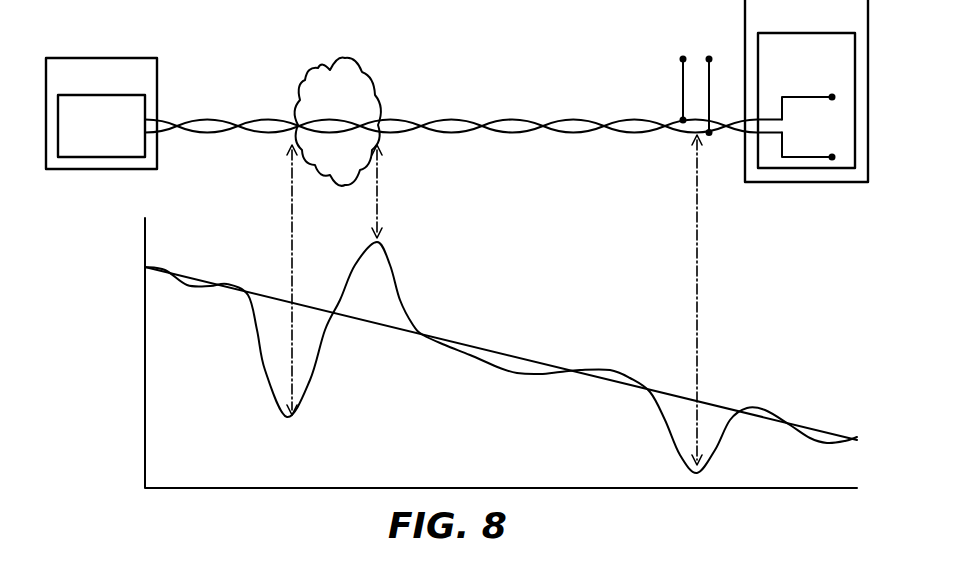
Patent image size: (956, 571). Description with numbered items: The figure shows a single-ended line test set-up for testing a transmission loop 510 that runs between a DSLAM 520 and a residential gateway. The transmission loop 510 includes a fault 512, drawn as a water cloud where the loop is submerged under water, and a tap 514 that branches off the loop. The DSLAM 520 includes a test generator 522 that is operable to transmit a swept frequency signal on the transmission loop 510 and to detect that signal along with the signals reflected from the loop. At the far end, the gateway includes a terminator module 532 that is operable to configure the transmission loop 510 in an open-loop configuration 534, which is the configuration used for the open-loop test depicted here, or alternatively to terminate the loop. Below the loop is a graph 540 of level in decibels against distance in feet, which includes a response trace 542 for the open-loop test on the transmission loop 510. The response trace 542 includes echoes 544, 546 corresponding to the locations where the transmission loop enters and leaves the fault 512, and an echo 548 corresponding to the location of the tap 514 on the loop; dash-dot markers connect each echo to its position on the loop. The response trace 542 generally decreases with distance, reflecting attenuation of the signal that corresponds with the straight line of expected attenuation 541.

The transmission loop 510 is at (512, 120).
The fault 512 is at (350, 58).
The tap 514 is at (697, 53).
The DSLAM 520 is at (127, 58).
The test generator 522 is at (130, 95).
The terminator module 532 is at (770, 33).
The open-loop configuration 534 is at (832, 196).
The graph 540 is at (165, 488).
The expected attenuation 541 is at (512, 353).
The response trace 542 is at (397, 288).
The echo 544 is at (290, 210).
The echo 546 is at (380, 210).
The echo 548 is at (696, 207).